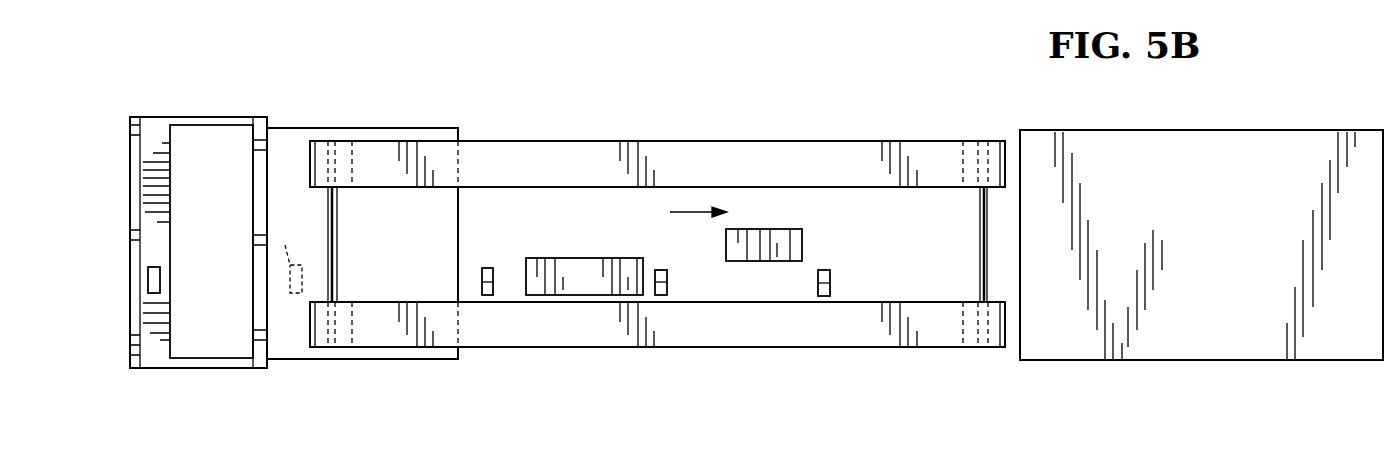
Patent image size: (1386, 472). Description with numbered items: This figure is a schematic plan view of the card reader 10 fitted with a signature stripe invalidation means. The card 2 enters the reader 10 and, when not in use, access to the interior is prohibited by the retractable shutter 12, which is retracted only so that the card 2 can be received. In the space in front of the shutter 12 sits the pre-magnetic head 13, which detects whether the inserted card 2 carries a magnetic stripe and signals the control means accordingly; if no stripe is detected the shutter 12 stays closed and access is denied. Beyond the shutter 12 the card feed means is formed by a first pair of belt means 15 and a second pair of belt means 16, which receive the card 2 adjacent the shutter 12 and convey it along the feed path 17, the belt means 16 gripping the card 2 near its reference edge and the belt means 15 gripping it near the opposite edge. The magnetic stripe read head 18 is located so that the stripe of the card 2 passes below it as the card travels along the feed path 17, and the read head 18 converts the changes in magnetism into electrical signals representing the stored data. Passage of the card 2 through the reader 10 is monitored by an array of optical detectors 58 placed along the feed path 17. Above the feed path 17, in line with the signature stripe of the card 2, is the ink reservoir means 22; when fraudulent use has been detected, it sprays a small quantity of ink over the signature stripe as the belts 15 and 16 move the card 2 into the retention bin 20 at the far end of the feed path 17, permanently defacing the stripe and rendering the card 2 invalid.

The card 2 is at (297, 128).
The card reader 10 is at (950, 377).
The retractable shutter 12 is at (253, 192).
The pre-magnetic head 13 is at (150, 282).
The first pair of co-operating belt means 15 is at (852, 348).
The second pair of co-operating belt means 16 is at (800, 142).
The feed path 17 is at (690, 215).
The magnetic stripe read head 18 is at (583, 258).
The retention bin 20 is at (1182, 350).
The ink reservoir means 22 is at (802, 234).
The optical detectors 58 is at (285, 245).